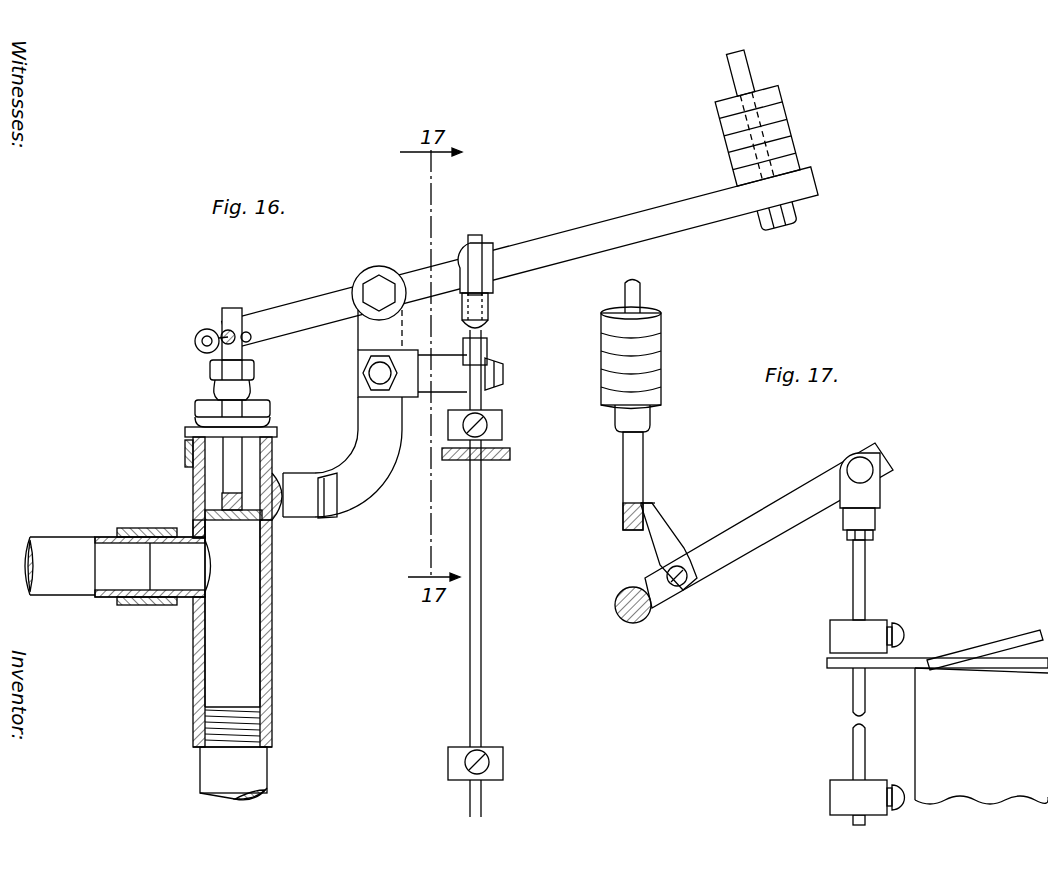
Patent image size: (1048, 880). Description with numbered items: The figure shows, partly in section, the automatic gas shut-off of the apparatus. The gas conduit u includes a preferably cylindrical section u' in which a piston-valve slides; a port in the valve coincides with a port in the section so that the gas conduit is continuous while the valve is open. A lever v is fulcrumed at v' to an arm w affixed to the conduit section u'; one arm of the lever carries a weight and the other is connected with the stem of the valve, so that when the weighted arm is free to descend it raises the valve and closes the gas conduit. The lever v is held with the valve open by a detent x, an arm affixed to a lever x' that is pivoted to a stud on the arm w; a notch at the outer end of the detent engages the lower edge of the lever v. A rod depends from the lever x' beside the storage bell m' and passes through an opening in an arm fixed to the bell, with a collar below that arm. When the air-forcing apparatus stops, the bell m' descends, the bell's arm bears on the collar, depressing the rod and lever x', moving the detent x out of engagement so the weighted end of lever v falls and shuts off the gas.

In FIG. 16, the gas conduit u is at (163, 654).
In FIG. 16, the conduit section u' is at (251, 628).
In FIG. 16, the lever v is at (502, 192).
In FIG. 17, the lever v is at (611, 481).
In FIG. 16, the fulcrum v' is at (379, 278).
In FIG. 16, the arm w is at (355, 426).
In FIG. 17, the detent x is at (764, 578).
In FIG. 17, the lever x' is at (769, 525).
In FIG. 17, the bell m' is at (985, 638).